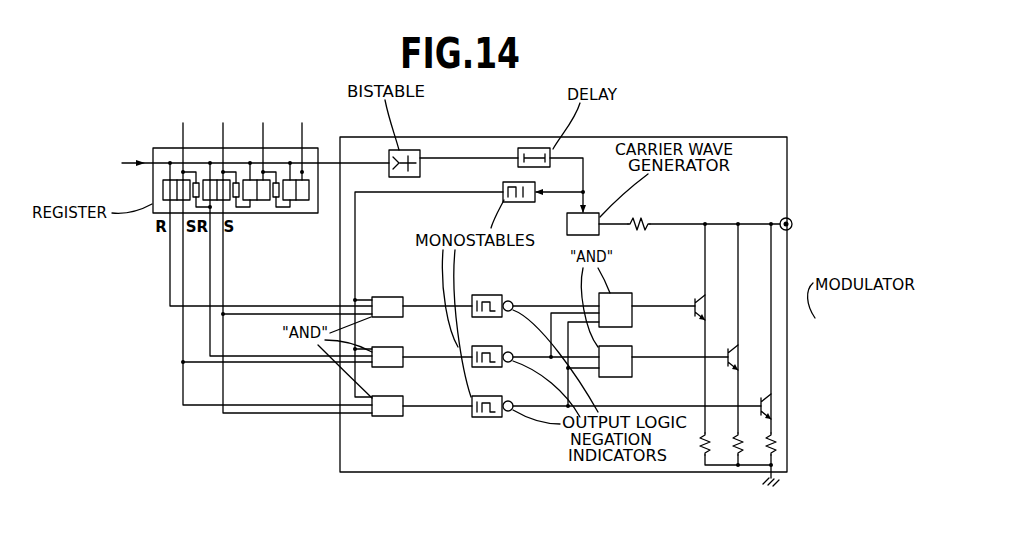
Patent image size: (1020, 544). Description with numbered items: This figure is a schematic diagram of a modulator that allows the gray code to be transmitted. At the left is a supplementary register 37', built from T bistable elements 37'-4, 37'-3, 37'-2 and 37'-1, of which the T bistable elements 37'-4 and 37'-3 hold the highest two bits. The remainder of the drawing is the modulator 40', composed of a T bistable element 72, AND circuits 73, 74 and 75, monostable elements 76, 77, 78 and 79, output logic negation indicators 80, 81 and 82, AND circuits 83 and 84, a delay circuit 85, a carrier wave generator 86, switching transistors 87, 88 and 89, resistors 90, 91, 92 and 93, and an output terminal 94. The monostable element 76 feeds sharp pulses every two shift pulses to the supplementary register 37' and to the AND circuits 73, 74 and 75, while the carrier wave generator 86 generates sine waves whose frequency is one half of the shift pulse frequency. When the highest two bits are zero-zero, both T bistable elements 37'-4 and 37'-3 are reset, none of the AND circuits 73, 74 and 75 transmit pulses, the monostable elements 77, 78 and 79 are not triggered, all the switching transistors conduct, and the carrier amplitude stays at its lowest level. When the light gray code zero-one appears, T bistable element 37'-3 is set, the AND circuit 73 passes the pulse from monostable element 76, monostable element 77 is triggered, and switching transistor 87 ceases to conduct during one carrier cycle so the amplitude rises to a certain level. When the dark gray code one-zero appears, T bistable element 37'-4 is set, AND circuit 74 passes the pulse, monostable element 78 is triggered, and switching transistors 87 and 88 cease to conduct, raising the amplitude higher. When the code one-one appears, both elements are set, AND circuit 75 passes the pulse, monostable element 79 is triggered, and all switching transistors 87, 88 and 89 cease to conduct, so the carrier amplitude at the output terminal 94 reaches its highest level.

The supplementary register 37' is at (235, 204).
The T bistable element 37'-1 is at (311, 131).
The T bistable element 37'-2 is at (261, 150).
The T bistable element 37'-3 is at (216, 136).
The T bistable element 37'-4 is at (166, 150).
The modulator 40' is at (586, 304).
The T bistable element 72 is at (408, 150).
The AND circuit 73 is at (403, 297).
The AND circuit 74 is at (403, 351).
The AND circuit 75 is at (403, 400).
The monostable element 76 is at (518, 202).
The monostable element 77 is at (489, 295).
The monostable element 78 is at (486, 346).
The monostable element 79 is at (486, 396).
The output logic negation indicator 80 is at (513, 302).
The output logic negation indicator 81 is at (512, 354).
The output logic negation indicator 82 is at (512, 403).
The AND circuit 83 is at (632, 298).
The AND circuit 84 is at (632, 351).
The delay circuit 85 is at (541, 148).
The carrier wave generator 86 is at (598, 213).
The switching transistor 87 is at (700, 312).
The switching transistor 88 is at (733, 359).
The switching transistor 89 is at (770, 406).
The resistor 90 is at (645, 222).
The resistor 91 is at (699, 456).
The resistor 92 is at (733, 456).
The resistor 93 is at (764, 456).
The output terminal 94 is at (782, 218).